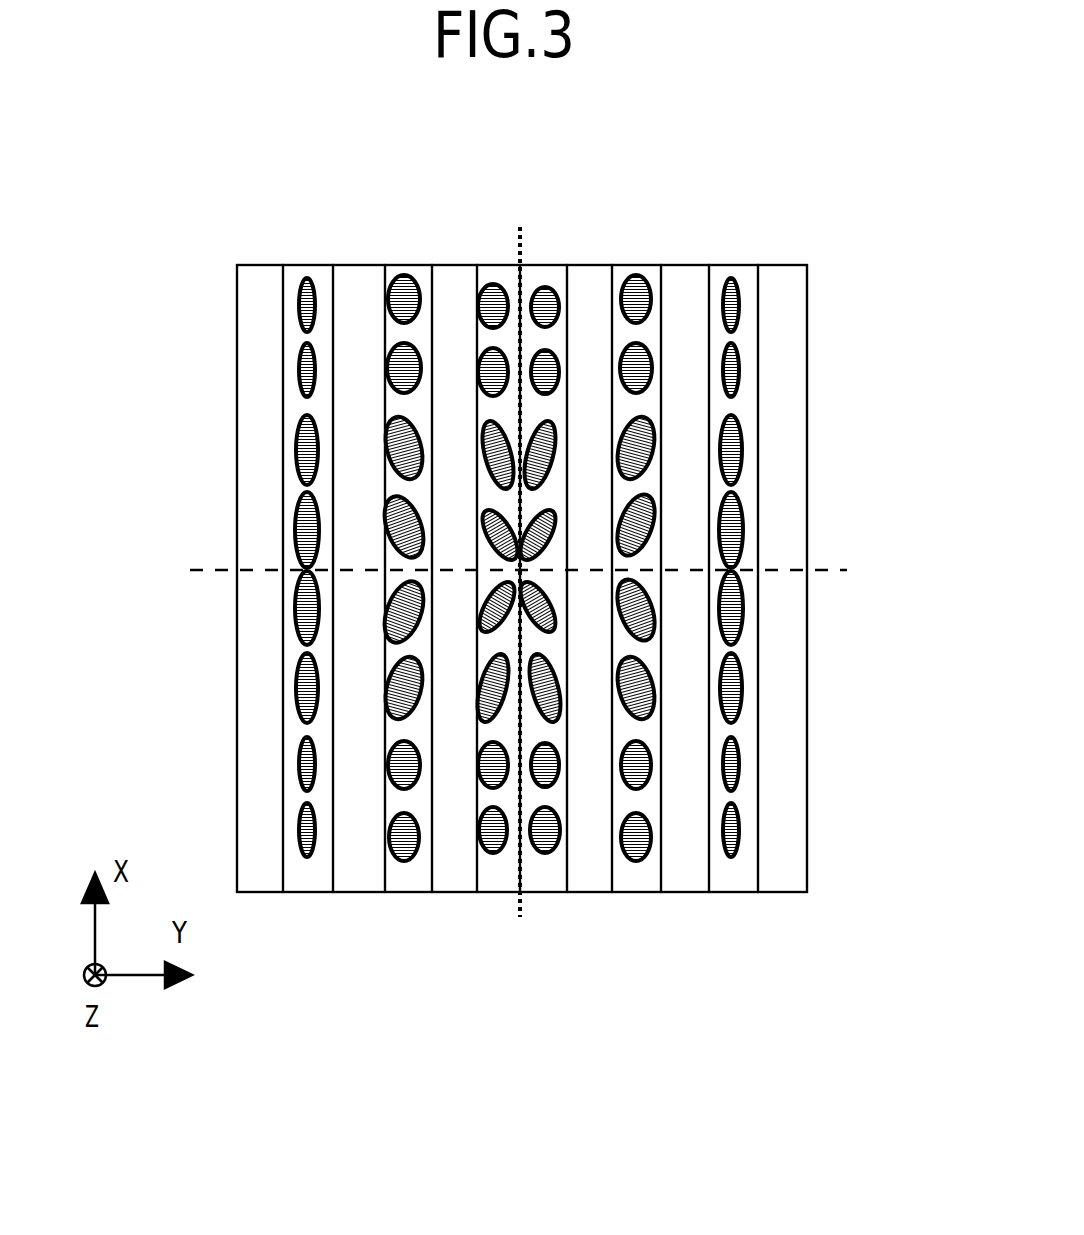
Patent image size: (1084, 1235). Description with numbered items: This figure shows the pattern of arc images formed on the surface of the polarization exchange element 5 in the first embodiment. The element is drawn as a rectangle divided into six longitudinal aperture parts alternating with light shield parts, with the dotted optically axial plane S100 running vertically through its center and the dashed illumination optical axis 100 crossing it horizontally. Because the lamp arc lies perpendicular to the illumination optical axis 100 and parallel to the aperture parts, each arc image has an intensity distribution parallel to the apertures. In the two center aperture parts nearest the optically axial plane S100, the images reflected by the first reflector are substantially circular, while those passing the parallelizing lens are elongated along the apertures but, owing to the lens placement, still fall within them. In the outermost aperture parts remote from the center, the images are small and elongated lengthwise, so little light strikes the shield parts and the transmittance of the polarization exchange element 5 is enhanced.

The polarization exchange element 5 is at (810, 380).
The illumination optical axis 100 is at (520, 570).
The optically axial plane S100 is at (520, 227).